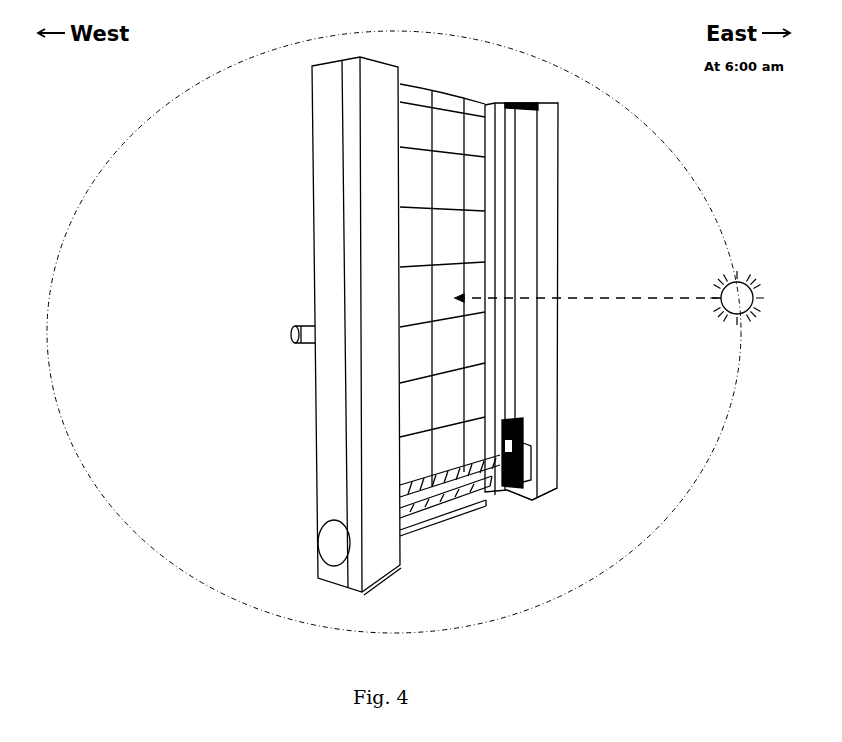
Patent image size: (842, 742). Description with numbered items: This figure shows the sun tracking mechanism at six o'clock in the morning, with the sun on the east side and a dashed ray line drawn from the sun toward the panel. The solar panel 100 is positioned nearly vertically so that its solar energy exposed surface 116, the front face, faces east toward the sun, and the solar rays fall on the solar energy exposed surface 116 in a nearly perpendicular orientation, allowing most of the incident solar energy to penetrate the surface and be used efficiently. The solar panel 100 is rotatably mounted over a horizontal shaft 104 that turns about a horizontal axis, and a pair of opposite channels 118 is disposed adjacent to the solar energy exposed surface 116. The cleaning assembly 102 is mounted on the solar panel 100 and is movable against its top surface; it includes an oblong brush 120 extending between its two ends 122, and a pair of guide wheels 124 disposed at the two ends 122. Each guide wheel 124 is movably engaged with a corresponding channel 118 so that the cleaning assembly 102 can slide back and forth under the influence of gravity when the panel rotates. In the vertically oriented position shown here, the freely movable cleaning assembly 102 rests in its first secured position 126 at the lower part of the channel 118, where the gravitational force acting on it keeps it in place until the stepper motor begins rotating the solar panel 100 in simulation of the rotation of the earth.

The solar panel 100 is at (513, 272).
The cleaning assembly 102 is at (423, 527).
The horizontal shaft 104 is at (297, 340).
The solar energy exposed surface 116 is at (473, 141).
The channels 118 is at (538, 213).
The oblong brush 120 is at (477, 473).
The ends 122 is at (543, 493).
The guide wheels 124 is at (528, 447).
The first secured position 126 is at (485, 500).